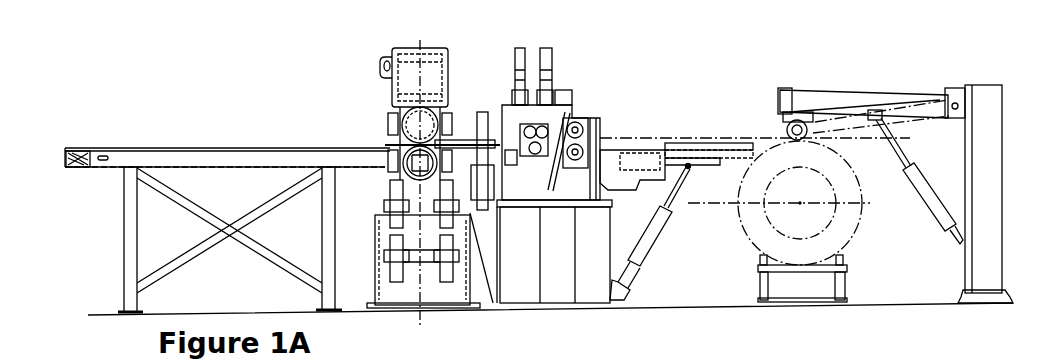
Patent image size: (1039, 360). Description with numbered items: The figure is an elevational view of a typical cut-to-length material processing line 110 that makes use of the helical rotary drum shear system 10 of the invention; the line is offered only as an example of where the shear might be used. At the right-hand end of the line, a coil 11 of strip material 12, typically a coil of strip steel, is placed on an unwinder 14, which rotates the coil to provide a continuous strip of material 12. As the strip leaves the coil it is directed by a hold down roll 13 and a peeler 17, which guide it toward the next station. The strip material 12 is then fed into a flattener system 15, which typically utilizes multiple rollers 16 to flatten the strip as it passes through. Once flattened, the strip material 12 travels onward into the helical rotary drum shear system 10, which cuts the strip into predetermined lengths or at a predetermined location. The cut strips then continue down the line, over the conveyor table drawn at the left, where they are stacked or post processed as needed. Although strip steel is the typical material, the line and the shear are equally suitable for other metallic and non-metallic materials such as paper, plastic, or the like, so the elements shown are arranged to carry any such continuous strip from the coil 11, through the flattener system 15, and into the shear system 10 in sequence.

The cut-to-length material processing line 110 is at (312, 62).
The helical rotary drum shear system 10 is at (386, 103).
The flattener system 15 is at (506, 105).
The rollers 16 is at (565, 98).
The strip material 12 is at (637, 138).
The peeler 17 is at (690, 170).
The coil 11 is at (851, 210).
The unwinder 14 is at (847, 277).
The hold down roll 13 is at (865, 93).